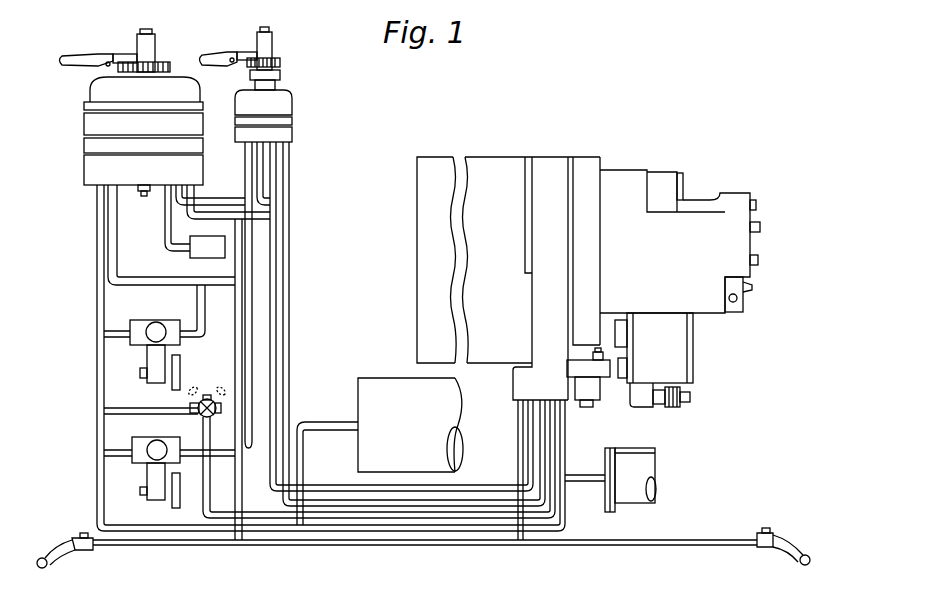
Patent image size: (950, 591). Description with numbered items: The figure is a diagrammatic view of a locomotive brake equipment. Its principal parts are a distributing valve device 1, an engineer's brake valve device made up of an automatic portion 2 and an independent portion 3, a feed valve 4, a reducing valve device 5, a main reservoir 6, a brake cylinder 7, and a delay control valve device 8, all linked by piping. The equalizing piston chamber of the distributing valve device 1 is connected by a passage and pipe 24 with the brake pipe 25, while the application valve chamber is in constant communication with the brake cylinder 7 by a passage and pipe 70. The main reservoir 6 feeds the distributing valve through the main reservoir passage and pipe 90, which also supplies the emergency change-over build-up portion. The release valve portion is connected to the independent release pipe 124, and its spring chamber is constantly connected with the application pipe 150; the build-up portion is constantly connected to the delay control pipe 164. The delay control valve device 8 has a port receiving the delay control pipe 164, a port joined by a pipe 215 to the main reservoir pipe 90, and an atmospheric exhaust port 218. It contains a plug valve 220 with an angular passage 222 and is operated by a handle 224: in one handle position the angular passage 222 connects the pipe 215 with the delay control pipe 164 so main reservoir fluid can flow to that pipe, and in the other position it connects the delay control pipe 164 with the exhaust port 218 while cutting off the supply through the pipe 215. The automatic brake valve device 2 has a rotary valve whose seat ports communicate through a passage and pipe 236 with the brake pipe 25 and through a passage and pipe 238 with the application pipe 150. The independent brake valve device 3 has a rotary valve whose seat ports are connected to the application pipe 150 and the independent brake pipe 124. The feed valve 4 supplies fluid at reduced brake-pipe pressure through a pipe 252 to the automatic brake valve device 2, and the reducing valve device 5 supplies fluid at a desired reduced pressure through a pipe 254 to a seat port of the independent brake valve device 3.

The distributing valve device 1 is at (536, 156).
The automatic brake valve device 2 is at (178, 72).
The independent brake valve device 3 is at (293, 91).
The feed valve device 4 is at (167, 326).
The reducing valve device 5 is at (147, 442).
The main reservoir 6 is at (360, 408).
The brake cylinder 7 is at (625, 487).
The delay control valve device 8 is at (206, 392).
The passage and pipe 24 is at (518, 437).
The brake pipe 25 is at (205, 543).
The passage and pipe 70 is at (600, 477).
The main reservoir pipe 90 is at (101, 388).
The independent release pipe 124 is at (288, 328).
The application pipe 150 is at (268, 478).
The delay control pipe 164 is at (207, 487).
The pipe 215 is at (147, 410).
The atmospheric exhaust port 218 is at (221, 407).
The plug valve 220 is at (199, 399).
The angular passage 222 is at (216, 398).
The handle 224 is at (225, 395).
The passage and pipe 236 is at (119, 200).
The passage and pipe 238 is at (235, 219).
The pipe 252 is at (110, 268).
The pipe 254 is at (247, 170).